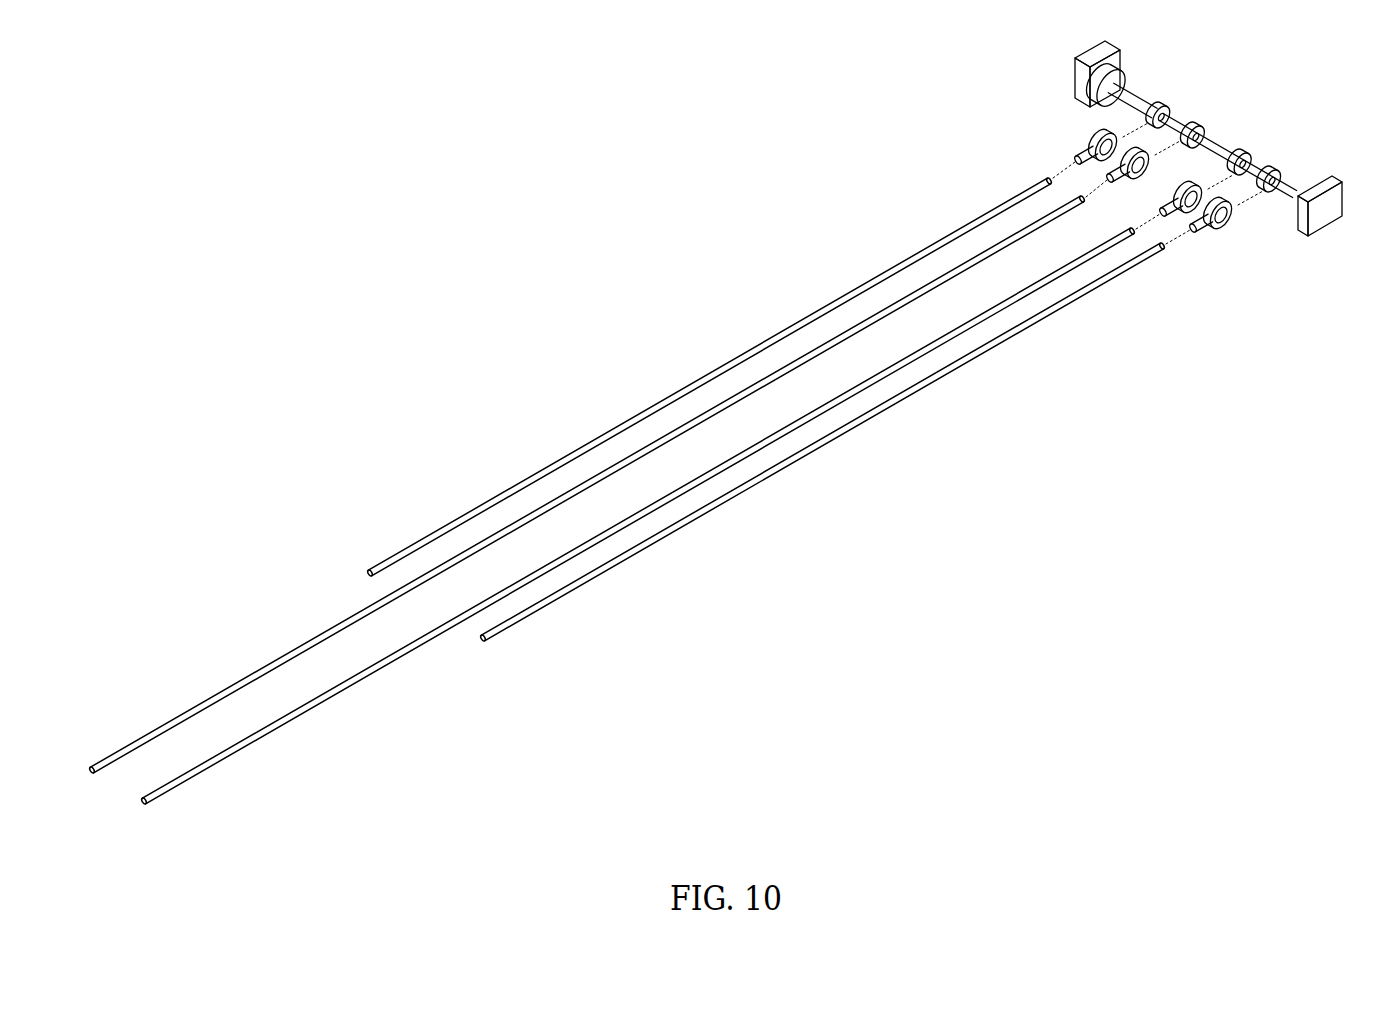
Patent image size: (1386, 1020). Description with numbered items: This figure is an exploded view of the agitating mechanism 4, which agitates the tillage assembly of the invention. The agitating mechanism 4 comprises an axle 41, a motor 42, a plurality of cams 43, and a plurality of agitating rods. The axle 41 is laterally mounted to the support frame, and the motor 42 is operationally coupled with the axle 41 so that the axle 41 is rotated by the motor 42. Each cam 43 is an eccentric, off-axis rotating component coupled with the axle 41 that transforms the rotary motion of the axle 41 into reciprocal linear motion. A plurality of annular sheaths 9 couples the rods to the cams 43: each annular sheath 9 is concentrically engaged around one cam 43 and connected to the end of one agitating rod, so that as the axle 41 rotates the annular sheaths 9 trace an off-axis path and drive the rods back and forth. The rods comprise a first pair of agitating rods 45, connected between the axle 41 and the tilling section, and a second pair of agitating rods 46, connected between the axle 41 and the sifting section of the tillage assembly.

The agitating mechanism 4 is at (883, 123).
The annular sheath 9 is at (1092, 146).
The axle 41 is at (1210, 143).
The motor 42 is at (1118, 84).
The cam 43 is at (1168, 108).
The first pair of agitating rods 45 is at (267, 670).
The second pair of agitating rods 46 is at (604, 435).